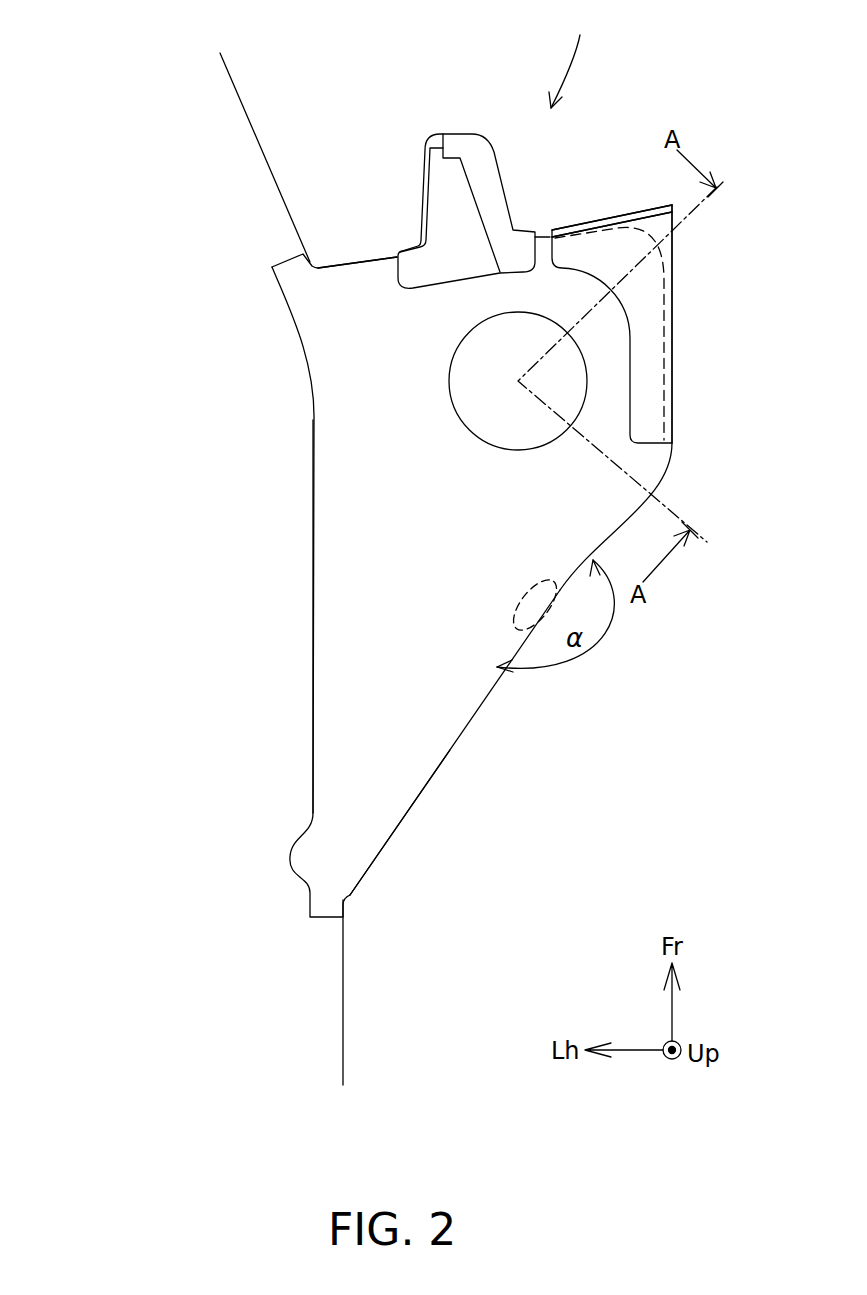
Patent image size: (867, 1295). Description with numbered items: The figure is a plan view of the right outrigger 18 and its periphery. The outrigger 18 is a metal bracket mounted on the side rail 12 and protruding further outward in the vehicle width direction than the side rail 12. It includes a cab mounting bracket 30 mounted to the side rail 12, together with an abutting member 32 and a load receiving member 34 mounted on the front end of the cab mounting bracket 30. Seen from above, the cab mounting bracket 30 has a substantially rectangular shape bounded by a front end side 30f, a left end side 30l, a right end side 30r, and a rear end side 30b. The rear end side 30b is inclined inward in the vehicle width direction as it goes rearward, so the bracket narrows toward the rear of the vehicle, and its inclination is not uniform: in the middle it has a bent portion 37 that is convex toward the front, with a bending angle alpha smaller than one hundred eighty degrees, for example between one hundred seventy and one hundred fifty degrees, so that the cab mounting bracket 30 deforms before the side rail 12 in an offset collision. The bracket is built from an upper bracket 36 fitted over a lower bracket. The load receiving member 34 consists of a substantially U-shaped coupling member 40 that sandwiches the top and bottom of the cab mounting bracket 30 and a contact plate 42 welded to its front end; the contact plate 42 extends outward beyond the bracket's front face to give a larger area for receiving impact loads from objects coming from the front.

The side rail 12 is at (220, 108).
The outrigger 18 is at (576, 58).
The cab mounting bracket 30 is at (388, 727).
The upper bracket 36 is at (455, 742).
The rear end side 30b is at (383, 842).
The left end side 30l is at (313, 617).
The front end side 30f is at (347, 262).
The right end side 30r is at (665, 352).
The abutting member 32 is at (463, 143).
The load receiving member 34 is at (652, 128).
The coupling member 40 is at (633, 226).
The contact plate 42 is at (587, 226).
The bent portion 37 is at (535, 623).